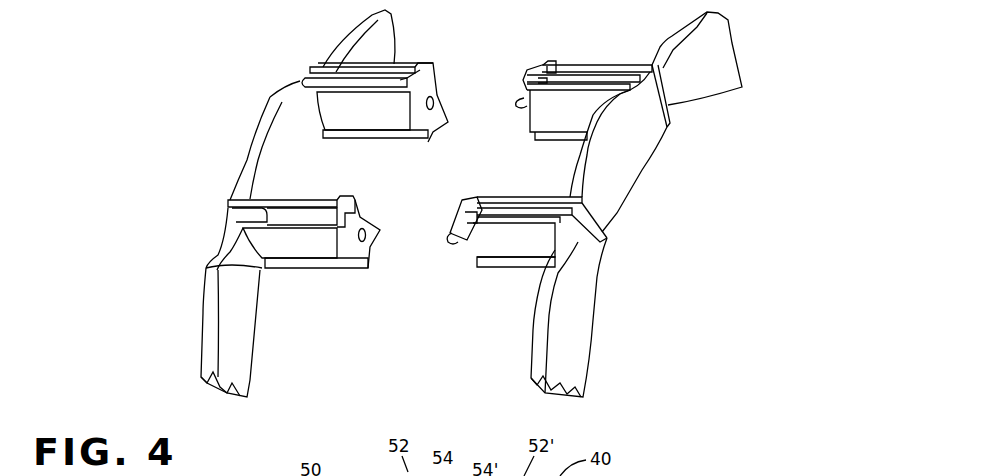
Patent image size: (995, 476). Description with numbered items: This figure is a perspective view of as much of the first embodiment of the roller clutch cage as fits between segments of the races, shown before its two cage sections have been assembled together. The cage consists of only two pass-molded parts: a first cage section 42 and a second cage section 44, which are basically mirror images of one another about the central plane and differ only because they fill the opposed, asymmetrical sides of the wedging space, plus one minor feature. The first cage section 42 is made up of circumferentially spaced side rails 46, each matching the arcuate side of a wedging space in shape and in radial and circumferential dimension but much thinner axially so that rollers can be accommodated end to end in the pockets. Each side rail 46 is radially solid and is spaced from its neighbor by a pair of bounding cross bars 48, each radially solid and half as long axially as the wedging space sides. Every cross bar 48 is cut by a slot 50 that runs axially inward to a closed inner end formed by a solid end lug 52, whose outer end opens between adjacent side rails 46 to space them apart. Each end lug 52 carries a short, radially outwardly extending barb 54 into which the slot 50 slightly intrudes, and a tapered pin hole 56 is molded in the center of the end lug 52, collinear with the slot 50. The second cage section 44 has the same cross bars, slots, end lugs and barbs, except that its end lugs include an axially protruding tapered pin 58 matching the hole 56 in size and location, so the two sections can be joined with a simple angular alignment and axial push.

The first cage section 42 is at (257, 136).
The second cage section 44 is at (622, 178).
The side rail 46 is at (205, 315).
The cross bar 48 is at (317, 205).
The slot 50 is at (323, 68).
The end lug 52 is at (436, 130).
The barb 54 is at (415, 68).
The tapered pin hole 56 is at (434, 103).
The tapered pin 58 is at (521, 100).